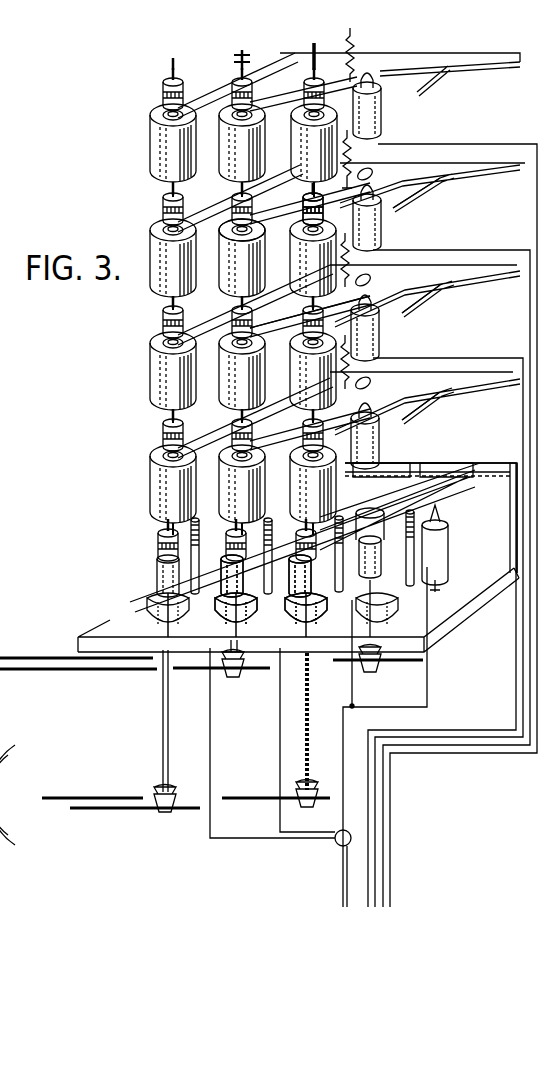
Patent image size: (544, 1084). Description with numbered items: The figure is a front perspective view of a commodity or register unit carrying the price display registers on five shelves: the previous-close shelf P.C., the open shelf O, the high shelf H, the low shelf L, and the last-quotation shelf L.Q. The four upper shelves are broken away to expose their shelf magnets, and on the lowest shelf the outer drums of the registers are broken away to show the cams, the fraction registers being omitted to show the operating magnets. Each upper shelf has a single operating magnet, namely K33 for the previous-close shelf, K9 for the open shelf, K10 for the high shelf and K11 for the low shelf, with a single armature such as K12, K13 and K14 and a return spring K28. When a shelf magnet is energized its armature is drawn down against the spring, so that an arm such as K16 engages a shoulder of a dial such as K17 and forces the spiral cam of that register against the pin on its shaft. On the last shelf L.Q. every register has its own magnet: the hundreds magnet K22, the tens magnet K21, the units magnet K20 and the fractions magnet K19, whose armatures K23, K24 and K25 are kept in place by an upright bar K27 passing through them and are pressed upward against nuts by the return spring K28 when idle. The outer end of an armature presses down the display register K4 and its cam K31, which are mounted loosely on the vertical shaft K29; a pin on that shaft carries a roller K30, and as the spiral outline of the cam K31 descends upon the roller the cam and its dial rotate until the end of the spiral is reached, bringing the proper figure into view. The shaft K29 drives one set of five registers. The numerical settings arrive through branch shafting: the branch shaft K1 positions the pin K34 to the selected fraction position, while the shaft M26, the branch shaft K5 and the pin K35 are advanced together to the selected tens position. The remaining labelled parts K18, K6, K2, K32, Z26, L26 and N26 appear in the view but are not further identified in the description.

The shelf operating magnet K33 is at (382, 118).
The return spring K28 is at (357, 159).
The armature K12 is at (396, 206).
The arm K16 is at (303, 222).
The dial K17 is at (258, 242).
The shelf operating magnet K9 is at (382, 232).
The bar K18 is at (240, 292).
The armature K13 is at (398, 312).
The shelf operating magnet K10 is at (380, 345).
The armature K14 is at (415, 410).
The shelf operating magnet K11 is at (380, 452).
The hundreds register magnet K22 is at (200, 520).
The tens register operating magnet K21 is at (268, 520).
The armature K25 is at (381, 479).
The armature K24 is at (446, 479).
The units register operating magnet K20 is at (410, 520).
The armature K23 is at (452, 500).
The fractions register operating magnet K19 is at (448, 552).
The wiper K6 is at (255, 616).
The pin K35 is at (250, 628).
The display register K4 is at (322, 617).
The roller K30 is at (320, 628).
The wiper K2 is at (472, 622).
The upright bar K27 is at (392, 625).
The pin K34 is at (298, 610).
The branch shaft K5 is at (225, 650).
The vertical shaft K29 is at (272, 655).
The cam K31 is at (352, 655).
The branch shaft K1 is at (405, 660).
The gear rod K32 is at (275, 798).
The shaft M26 is at (78, 673).
The shaft Z26 is at (162, 735).
The rod L26 is at (70, 797).
The rod N26 is at (100, 812).
The previous close shelf P.C. is at (224, 120).
The open shelf O is at (229, 246).
The high shelf H is at (229, 359).
The low shelf L is at (229, 472).
The last shelf L.Q. is at (216, 578).